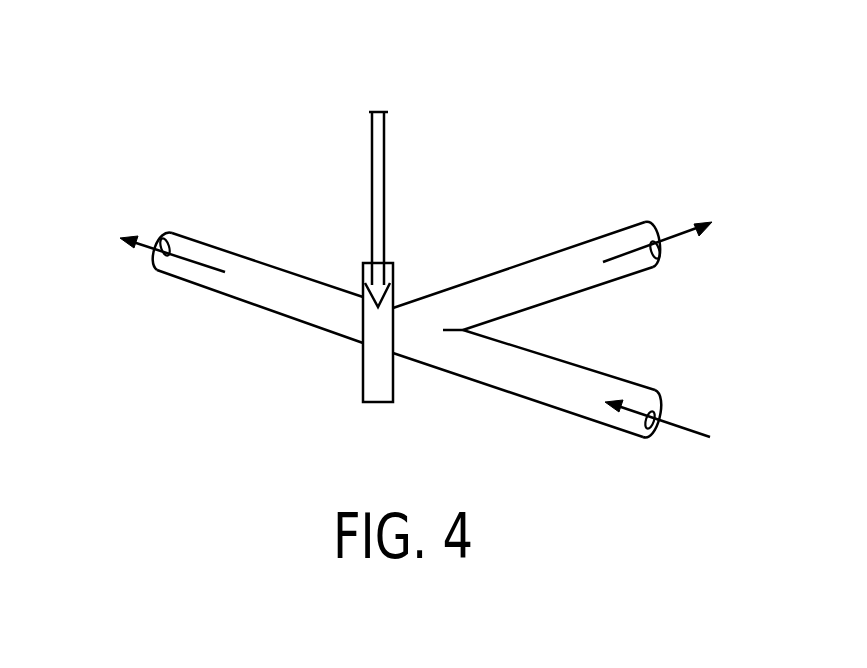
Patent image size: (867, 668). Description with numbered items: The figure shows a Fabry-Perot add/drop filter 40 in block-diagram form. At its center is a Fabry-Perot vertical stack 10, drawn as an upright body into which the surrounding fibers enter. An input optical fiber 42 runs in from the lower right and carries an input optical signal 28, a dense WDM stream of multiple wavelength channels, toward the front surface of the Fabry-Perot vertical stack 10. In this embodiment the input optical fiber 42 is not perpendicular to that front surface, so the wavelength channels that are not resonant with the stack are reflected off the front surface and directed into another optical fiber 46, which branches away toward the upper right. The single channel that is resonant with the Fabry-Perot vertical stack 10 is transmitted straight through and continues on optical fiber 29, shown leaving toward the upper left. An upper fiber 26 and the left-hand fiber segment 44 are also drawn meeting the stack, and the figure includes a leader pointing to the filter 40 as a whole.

The Fabry-Perot add/drop filter 40 is at (610, 109).
The Fabry-Perot vertical stack 10 is at (378, 387).
The injection tube 26 is at (385, 165).
The input optical signal 28 is at (687, 423).
The optical fiber 29 is at (150, 248).
The input optical fiber 42 is at (512, 398).
The outlet tube 44 is at (265, 260).
The optical fiber 46 is at (522, 263).